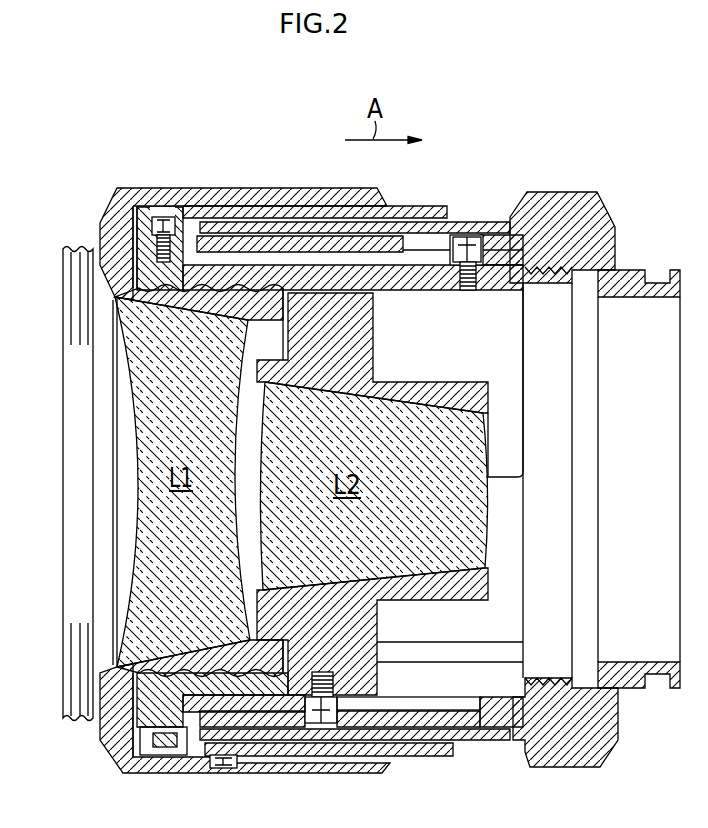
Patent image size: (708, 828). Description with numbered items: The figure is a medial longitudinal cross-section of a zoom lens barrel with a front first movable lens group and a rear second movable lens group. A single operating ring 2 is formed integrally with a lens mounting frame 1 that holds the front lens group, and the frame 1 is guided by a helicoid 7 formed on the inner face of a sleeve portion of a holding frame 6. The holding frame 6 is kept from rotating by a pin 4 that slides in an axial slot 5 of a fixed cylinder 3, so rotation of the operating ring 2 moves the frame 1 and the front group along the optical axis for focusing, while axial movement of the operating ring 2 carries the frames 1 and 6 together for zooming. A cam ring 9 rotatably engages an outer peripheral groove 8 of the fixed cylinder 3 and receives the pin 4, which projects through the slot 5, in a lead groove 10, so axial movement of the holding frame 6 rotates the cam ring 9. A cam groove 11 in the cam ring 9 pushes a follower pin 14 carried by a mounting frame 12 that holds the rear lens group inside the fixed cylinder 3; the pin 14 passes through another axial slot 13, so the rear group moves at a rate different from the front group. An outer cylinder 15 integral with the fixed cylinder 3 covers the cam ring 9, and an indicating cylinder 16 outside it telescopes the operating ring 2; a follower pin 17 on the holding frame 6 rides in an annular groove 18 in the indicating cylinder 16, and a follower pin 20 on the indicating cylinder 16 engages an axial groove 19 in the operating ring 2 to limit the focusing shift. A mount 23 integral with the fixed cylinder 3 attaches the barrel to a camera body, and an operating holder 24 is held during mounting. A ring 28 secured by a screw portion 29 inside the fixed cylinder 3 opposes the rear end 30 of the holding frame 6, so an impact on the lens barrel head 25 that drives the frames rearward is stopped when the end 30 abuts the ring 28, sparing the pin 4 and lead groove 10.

The lens mounting frame 1 is at (220, 298).
The operating ring 2 is at (230, 197).
The fixed cylinder 3 is at (205, 268).
The pin 4 is at (482, 240).
The axial slot 5 is at (420, 262).
The holding frame 6 is at (437, 268).
The helicoid 7 is at (168, 288).
The outer peripheral groove 8 is at (237, 262).
The cam ring 9 is at (287, 237).
The lead groove 10 is at (433, 238).
The cam groove 11 is at (350, 723).
The mounting frame 12 is at (340, 627).
The axial slot 13 is at (413, 707).
The follower pin 14 is at (333, 705).
The outer cylinder 15 is at (417, 222).
The indicating cylinder 16 is at (395, 210).
The follower pin 17 is at (140, 233).
The annular groove 18 is at (162, 222).
The axial groove 19 is at (263, 762).
The follower pin 20 is at (226, 769).
The mount 23 is at (653, 282).
The operating holder 24 is at (552, 205).
The lens barrel head 25 is at (68, 249).
The ring 28 is at (552, 284).
The screw portion 29 is at (543, 265).
The rear end 30 is at (512, 285).